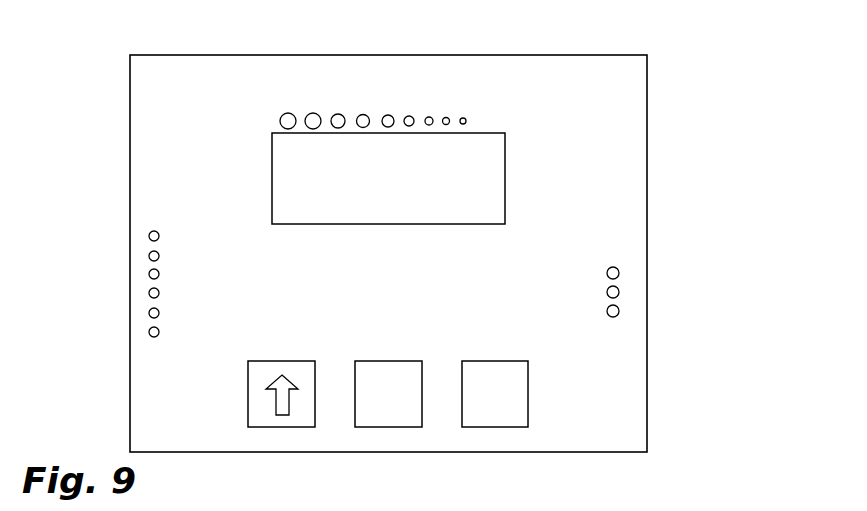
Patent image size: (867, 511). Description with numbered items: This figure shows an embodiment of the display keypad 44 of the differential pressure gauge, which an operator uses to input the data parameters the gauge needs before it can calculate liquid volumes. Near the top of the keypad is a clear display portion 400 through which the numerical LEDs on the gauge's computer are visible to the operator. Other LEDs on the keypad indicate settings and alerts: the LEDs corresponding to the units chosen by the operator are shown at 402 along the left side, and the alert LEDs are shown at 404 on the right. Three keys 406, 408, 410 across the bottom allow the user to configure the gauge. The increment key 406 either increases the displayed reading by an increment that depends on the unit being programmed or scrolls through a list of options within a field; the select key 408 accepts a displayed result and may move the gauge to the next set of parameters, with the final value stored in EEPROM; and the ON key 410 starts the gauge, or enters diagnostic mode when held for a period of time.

The display keypad 44 is at (670, 117).
The clear display portion 400 is at (272, 180).
The unit LEDs 402 is at (143, 267).
The alert LEDs 404 is at (630, 288).
The increment key 406 is at (272, 361).
The select key 408 is at (376, 361).
The ON key 410 is at (487, 361).